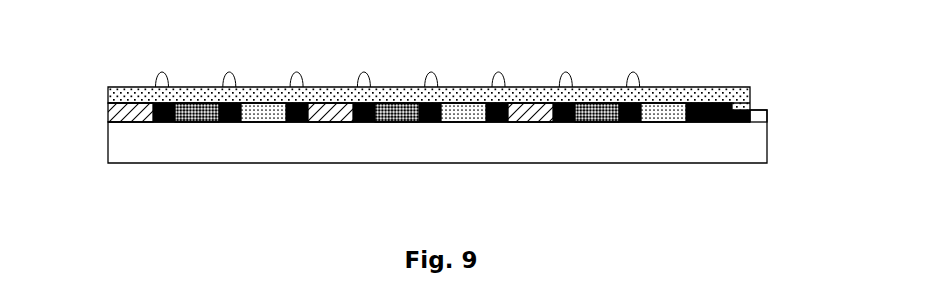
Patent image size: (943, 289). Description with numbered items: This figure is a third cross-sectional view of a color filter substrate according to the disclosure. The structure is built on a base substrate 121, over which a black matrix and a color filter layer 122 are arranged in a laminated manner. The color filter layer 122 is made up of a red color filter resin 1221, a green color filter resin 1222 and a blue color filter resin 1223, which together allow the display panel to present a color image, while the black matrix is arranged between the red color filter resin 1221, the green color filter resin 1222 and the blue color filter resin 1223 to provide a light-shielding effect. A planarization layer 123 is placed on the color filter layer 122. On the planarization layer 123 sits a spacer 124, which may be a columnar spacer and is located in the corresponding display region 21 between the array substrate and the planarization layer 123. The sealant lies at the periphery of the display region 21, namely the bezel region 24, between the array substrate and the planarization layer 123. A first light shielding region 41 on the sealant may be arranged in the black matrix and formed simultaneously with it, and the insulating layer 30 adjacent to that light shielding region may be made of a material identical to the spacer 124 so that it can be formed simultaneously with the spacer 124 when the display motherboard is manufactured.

The base substrate 121 is at (745, 146).
The color filter layer 122 is at (389, 80).
The red color filter resin 1221 is at (131, 112).
The green color filter resin 1222 is at (198, 112).
The blue color filter resin 1223 is at (264, 112).
The planarization layer 123 is at (750, 93).
The spacer 124 is at (363, 83).
The display region 21 is at (108, 163).
The bezel region 24 is at (688, 163).
The insulating layer 30 is at (759, 112).
The first light shielding region 41 is at (705, 103).